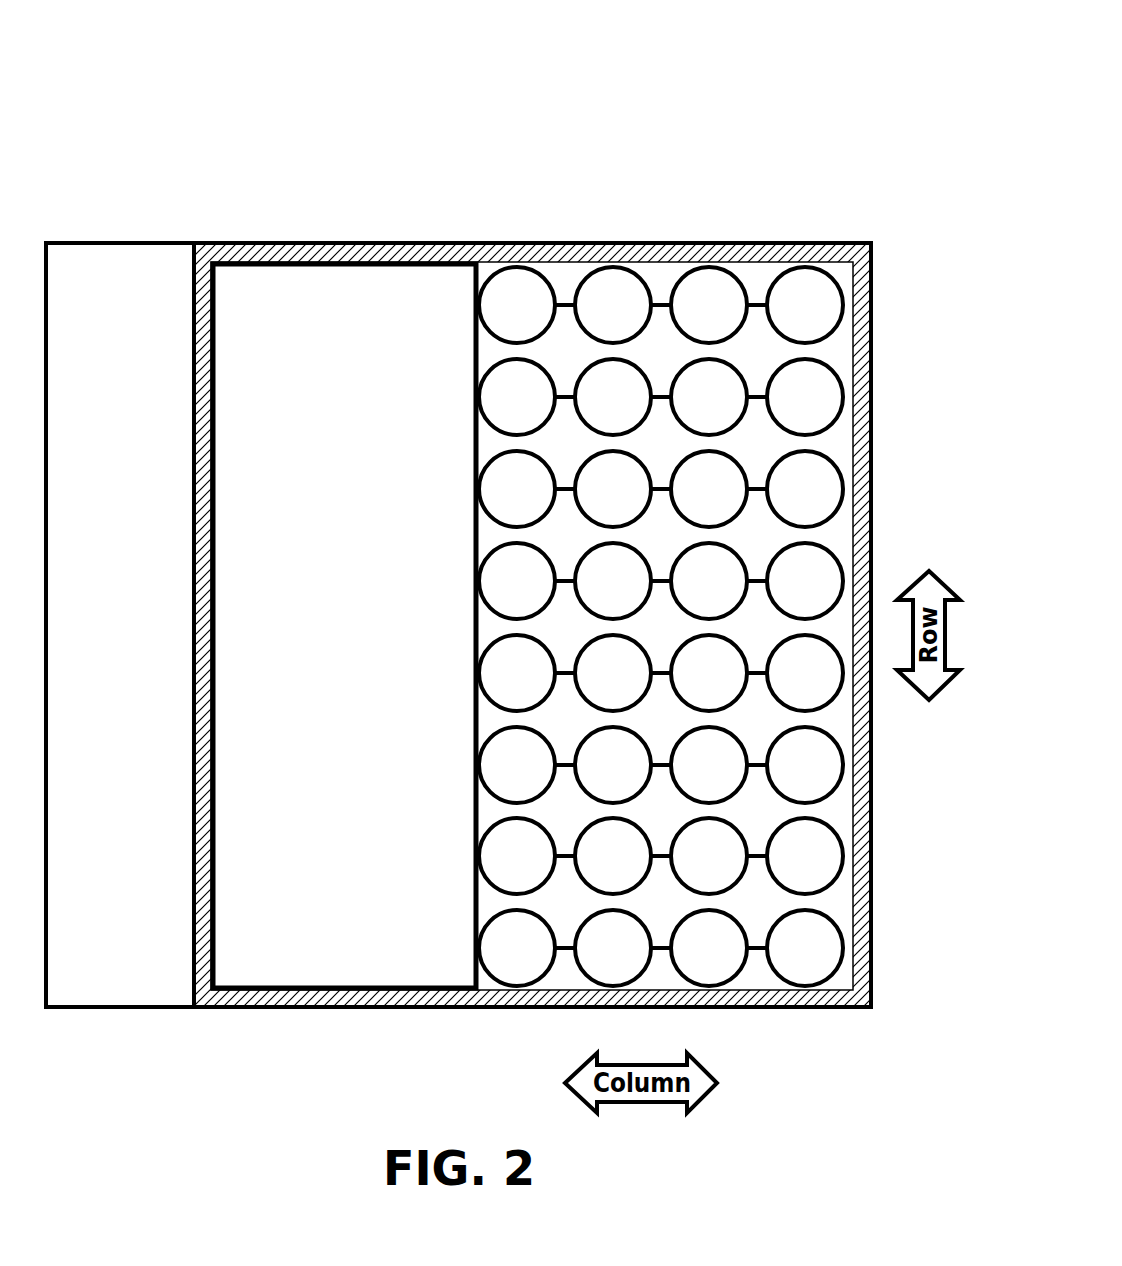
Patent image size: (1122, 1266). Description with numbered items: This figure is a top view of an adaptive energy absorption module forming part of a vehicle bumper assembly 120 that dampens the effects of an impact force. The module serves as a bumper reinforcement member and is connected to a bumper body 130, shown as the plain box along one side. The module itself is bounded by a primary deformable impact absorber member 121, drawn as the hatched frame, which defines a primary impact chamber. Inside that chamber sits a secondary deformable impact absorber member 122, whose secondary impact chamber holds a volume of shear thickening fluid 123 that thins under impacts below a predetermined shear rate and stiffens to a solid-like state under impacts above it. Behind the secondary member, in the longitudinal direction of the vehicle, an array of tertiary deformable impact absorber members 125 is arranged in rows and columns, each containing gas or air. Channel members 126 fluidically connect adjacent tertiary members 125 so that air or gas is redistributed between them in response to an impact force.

The bumper assembly 120 is at (847, 87).
The primary deformable impact absorber member 121 is at (348, 240).
The secondary deformable impact absorber member 122 is at (344, 626).
The shear thickening fluid 123 is at (392, 636).
The tertiary deformable impact absorber member 125 is at (661, 626).
The channel member 126 is at (567, 302).
The bumper body 130 is at (99, 636).